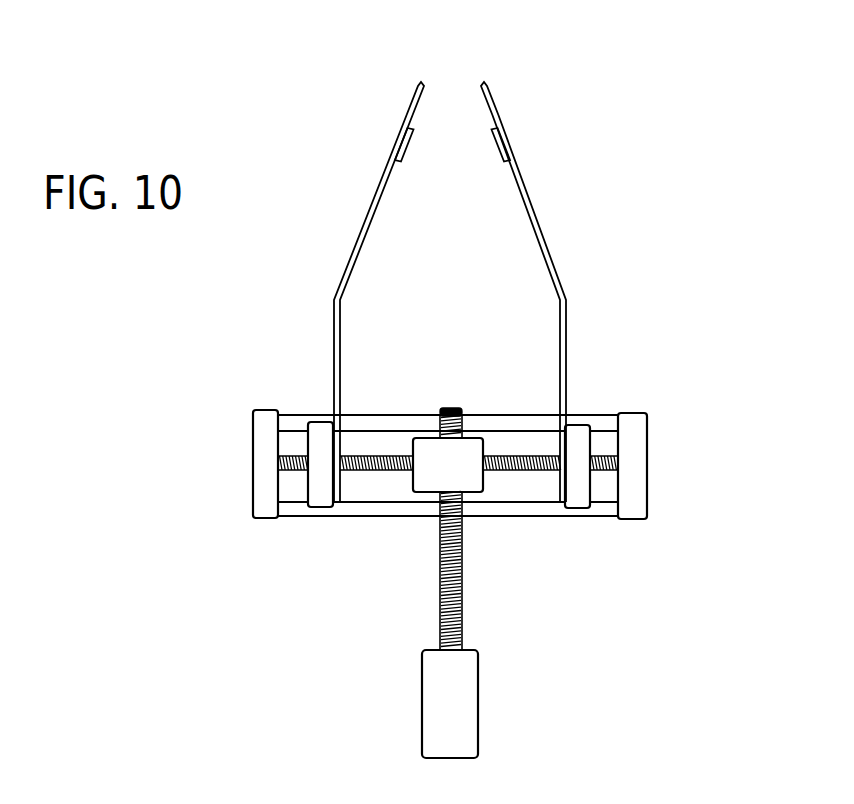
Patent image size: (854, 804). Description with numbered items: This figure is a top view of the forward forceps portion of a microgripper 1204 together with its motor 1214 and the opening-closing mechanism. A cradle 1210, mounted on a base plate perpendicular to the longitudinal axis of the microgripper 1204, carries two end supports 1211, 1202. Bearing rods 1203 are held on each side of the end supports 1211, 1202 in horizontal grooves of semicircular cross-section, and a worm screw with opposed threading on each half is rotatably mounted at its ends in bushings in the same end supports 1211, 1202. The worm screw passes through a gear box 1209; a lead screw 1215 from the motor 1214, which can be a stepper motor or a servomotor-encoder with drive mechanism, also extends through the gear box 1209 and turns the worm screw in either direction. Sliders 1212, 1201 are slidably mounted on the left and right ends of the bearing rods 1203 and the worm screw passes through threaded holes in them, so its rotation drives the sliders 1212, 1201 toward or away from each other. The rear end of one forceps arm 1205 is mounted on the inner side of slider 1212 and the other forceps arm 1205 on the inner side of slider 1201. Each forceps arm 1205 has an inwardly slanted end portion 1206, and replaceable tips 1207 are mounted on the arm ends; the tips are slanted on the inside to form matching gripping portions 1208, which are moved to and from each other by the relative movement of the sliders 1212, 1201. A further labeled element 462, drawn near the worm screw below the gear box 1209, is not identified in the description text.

The slider 1201 is at (578, 508).
The end support 1202 is at (642, 448).
The bearing rods 1203 is at (603, 420).
The microgripper 1204 is at (662, 268).
The forceps arm 1205 is at (358, 214).
The inwardly slanted end portion 1206 is at (383, 170).
The replaceable tips 1207 is at (406, 112).
The gripping portions 1208 is at (462, 64).
The gear box 1209 is at (470, 447).
The cradle 1210 is at (242, 421).
The end support 1211 is at (253, 470).
The slider 1212 is at (318, 508).
The motor 1214 is at (478, 728).
The lead screw 1215 is at (462, 627).
The screw shaft 462 is at (527, 477).